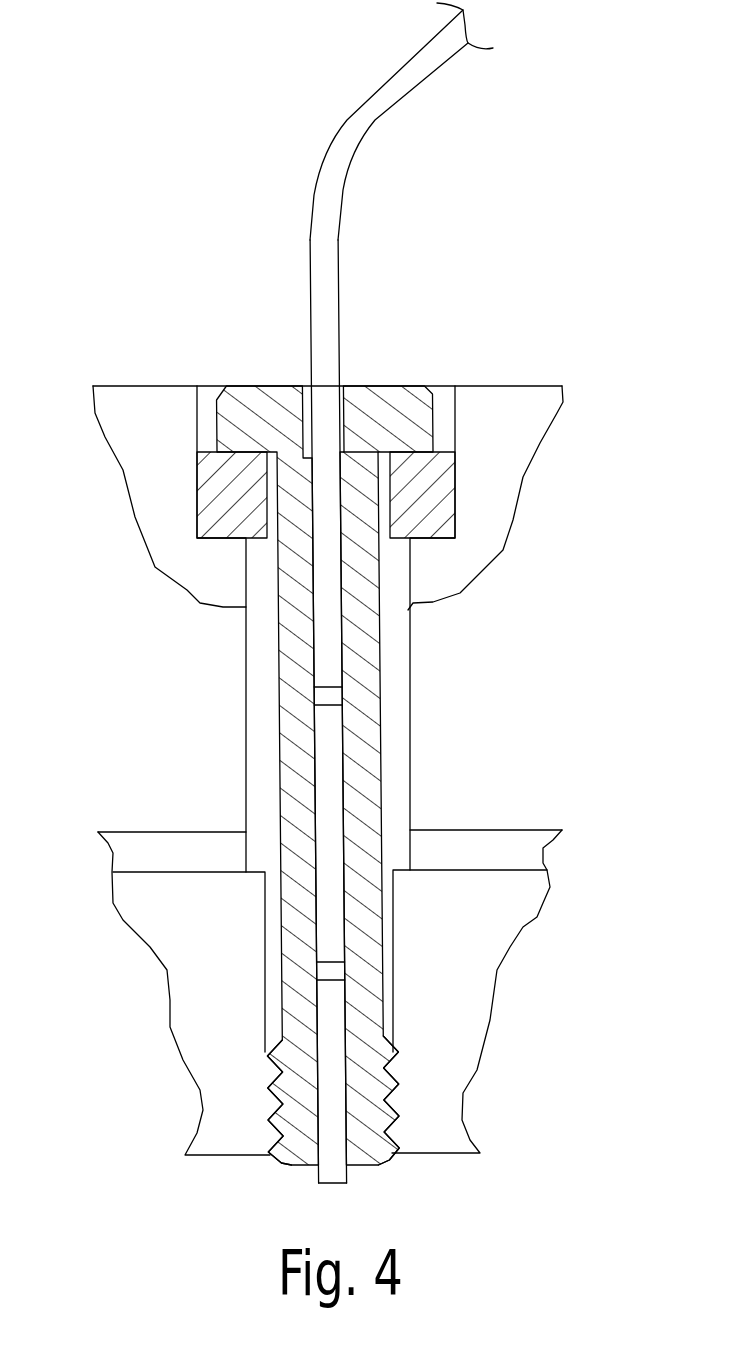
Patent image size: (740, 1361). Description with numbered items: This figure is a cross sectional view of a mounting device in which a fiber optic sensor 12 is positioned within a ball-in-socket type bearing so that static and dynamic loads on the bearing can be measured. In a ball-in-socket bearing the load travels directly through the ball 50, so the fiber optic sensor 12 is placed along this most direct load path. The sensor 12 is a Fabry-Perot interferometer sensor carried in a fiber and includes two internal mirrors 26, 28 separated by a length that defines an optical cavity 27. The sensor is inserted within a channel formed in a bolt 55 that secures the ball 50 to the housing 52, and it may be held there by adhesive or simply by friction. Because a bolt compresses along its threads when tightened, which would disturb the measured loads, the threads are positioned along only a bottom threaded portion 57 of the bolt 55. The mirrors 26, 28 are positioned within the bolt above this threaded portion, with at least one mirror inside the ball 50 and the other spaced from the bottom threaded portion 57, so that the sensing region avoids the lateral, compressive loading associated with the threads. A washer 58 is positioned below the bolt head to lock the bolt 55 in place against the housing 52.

The fiber optic sensor 12 is at (318, 176).
The internal mirror 26 is at (320, 697).
The optical cavity 27 is at (332, 763).
The internal mirror 28 is at (345, 977).
The ball 50 is at (523, 915).
The housing 52 is at (117, 437).
The bolt 55 is at (368, 653).
The bottom threaded portion 57 is at (277, 1097).
The washer 58 is at (443, 494).